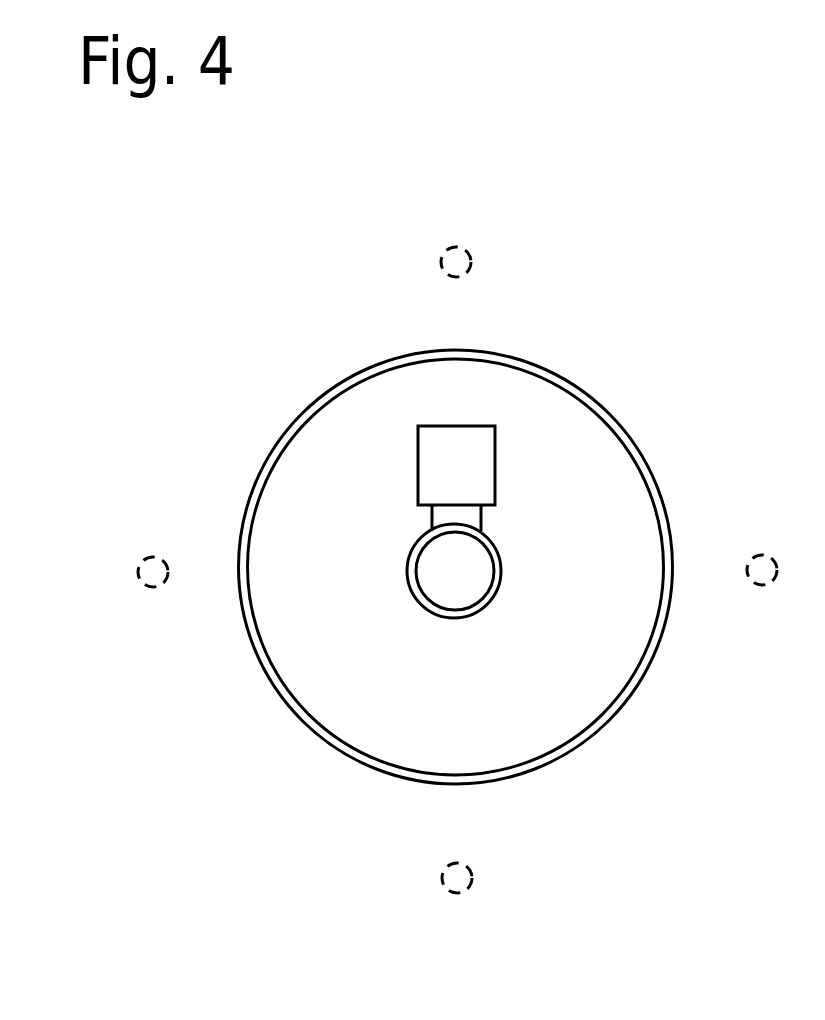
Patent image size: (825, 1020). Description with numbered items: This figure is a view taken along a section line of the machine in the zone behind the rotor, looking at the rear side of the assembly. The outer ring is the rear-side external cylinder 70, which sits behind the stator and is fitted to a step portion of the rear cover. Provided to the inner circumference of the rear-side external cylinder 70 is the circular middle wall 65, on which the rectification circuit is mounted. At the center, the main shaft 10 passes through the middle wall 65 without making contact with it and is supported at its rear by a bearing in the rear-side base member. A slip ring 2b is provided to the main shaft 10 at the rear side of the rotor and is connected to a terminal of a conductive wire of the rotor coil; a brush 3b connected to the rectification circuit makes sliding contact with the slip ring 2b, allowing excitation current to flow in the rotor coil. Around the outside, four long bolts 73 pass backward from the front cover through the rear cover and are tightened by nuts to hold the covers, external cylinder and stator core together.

The rear-side external cylinder 70 is at (602, 742).
The middle wall 65 is at (373, 725).
The brush 3b is at (440, 516).
The slip ring 2b is at (504, 556).
The main shaft 10 is at (486, 598).
The long bolts 73 is at (468, 260).